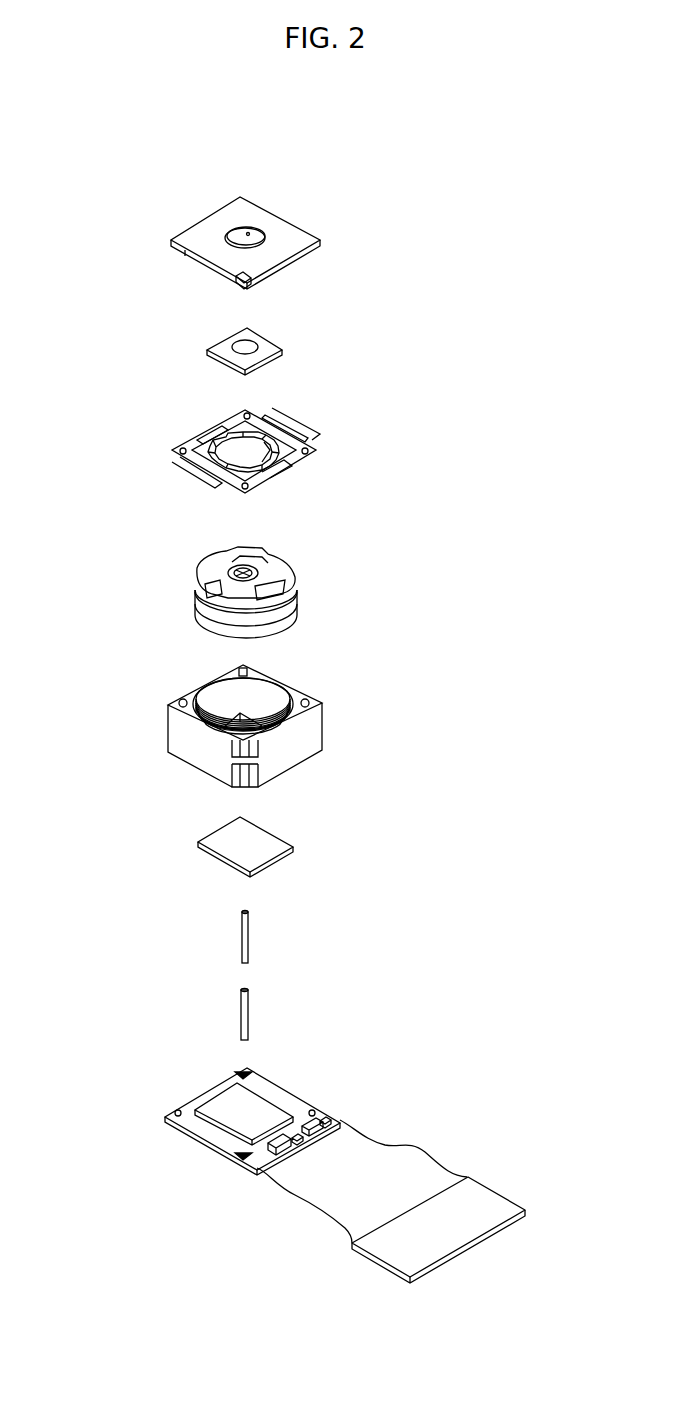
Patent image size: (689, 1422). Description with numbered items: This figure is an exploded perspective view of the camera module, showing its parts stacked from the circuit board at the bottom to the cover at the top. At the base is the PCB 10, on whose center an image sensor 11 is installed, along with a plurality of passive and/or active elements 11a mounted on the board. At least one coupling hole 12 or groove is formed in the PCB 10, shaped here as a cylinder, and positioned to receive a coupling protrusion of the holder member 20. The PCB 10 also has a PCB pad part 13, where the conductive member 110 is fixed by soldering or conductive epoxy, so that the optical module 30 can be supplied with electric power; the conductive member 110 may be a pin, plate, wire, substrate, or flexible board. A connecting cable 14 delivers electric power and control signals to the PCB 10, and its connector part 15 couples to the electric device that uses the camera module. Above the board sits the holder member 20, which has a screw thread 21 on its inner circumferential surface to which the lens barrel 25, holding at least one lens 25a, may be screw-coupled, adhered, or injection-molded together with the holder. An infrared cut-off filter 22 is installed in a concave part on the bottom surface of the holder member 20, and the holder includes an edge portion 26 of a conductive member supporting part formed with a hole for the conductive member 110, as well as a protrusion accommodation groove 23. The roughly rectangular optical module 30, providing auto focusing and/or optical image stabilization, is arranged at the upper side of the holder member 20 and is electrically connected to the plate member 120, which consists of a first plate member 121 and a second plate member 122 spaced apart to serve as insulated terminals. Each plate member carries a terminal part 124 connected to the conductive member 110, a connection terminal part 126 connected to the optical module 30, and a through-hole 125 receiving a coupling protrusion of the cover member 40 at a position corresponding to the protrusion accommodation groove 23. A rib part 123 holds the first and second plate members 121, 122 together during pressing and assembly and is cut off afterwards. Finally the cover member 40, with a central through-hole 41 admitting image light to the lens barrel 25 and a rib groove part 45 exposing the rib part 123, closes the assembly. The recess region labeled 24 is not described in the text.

The PCB 10 is at (247, 1123).
The image sensor 11 is at (260, 1105).
The passive and/or active elements 11a is at (255, 1168).
The coupling hole 12 is at (178, 1113).
The PCB pad part 13 is at (248, 1068).
The connecting cable 14 is at (400, 1154).
The connector part 15 is at (495, 1200).
The holder member 20 is at (294, 726).
The screw thread 21 is at (270, 695).
The infrared cut-off filter 22 is at (270, 852).
The protrusion accommodation groove 23 is at (308, 700).
The lens receiving recess 24 is at (250, 712).
The lens barrel 25 is at (268, 573).
The lens 25a is at (240, 572).
The edge portion 26 is at (260, 770).
The optical module 30 is at (300, 335).
The cover member 40 is at (295, 240).
The through-hole 41 is at (250, 236).
The rib groove part 45 is at (226, 280).
The conductive member 110 is at (250, 937).
The plate member 120 is at (222, 438).
The first plate member 121 is at (200, 470).
The second plate member 122 is at (200, 452).
The rib part 123 is at (310, 437).
The terminal part 124 is at (250, 412).
The through-hole 125 is at (310, 452).
The connection terminal part 126 is at (270, 450).